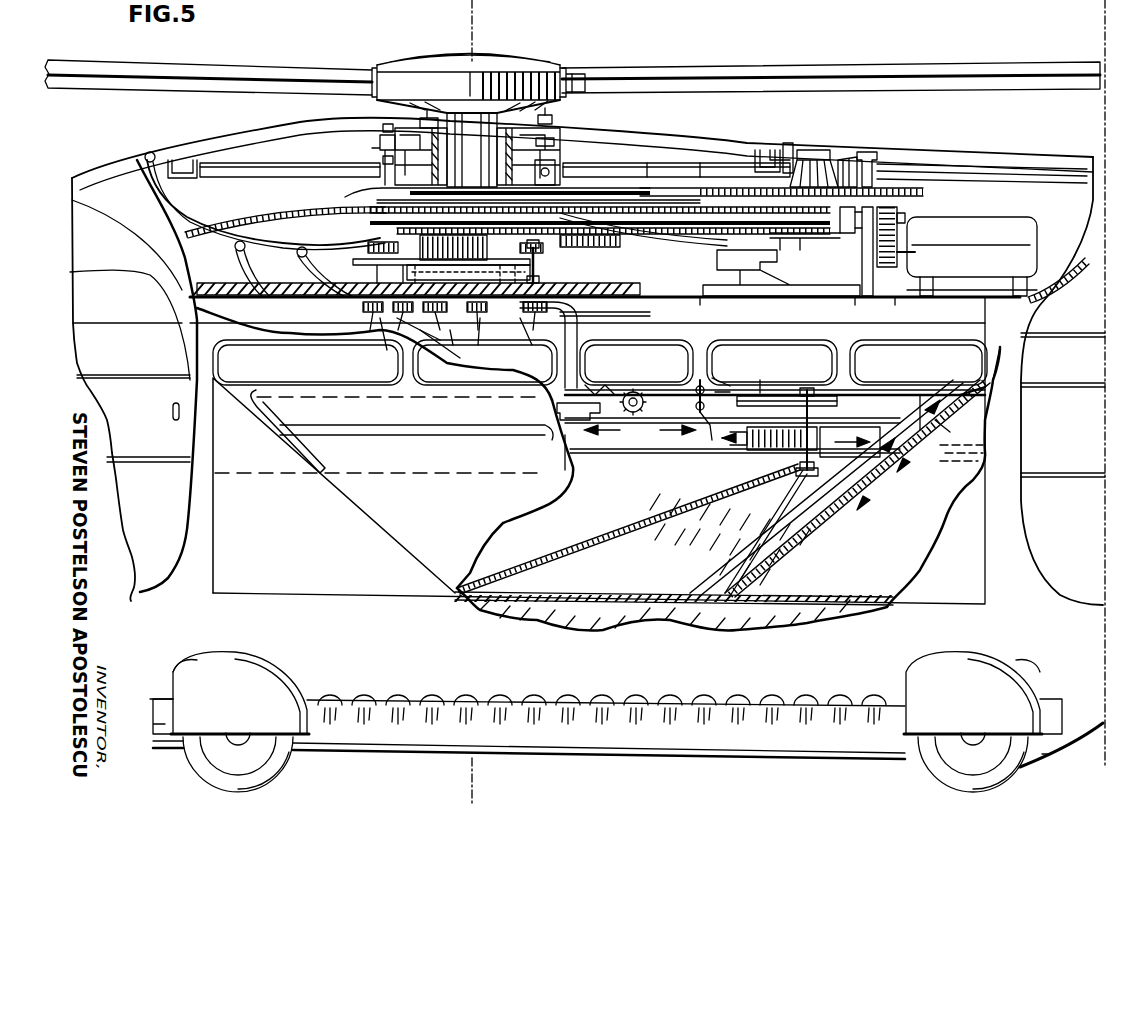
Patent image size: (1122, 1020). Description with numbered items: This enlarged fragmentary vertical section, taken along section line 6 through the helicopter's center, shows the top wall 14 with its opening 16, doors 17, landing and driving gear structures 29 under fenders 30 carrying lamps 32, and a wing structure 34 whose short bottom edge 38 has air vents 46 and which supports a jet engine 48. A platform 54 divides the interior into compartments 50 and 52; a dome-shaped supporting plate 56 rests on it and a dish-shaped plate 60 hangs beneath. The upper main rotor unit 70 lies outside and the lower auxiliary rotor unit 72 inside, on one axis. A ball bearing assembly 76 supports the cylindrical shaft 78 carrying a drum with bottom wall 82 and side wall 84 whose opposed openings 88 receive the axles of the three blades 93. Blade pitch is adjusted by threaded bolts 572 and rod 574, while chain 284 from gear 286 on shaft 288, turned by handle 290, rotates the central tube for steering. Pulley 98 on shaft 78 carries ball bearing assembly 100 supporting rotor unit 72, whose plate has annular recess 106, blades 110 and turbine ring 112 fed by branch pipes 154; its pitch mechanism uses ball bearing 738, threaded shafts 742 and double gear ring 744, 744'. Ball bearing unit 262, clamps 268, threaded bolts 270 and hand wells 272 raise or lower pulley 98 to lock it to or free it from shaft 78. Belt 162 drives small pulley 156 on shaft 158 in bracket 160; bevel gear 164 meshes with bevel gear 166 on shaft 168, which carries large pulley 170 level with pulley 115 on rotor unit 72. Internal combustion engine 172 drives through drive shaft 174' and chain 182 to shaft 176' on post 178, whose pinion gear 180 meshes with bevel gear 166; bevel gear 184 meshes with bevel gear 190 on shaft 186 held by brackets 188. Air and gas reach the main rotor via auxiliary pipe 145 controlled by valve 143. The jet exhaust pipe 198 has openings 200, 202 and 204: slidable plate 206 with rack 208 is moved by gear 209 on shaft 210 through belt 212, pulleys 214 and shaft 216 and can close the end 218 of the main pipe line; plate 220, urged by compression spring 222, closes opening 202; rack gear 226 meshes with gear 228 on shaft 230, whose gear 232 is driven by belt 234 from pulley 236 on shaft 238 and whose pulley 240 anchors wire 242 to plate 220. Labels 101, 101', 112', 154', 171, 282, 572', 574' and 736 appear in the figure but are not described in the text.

The section line 6- 6 is at (455, 18).
The top wall 14 is at (718, 145).
The opening 16 is at (556, 67).
The doors 17 is at (158, 566).
The landing and driving gear structures 29 is at (300, 772).
The fenders or shields 30 is at (282, 676).
The lamps 32 is at (168, 688).
The wing structure 34 is at (368, 533).
The bottom edge 38 is at (866, 596).
The air vents 46 is at (592, 591).
The jet engine 48 is at (282, 458).
The compartment 50 is at (605, 278).
The compartment 52 is at (730, 539).
The platform 54 is at (235, 283).
The dome-shaped supporting plate 56 is at (648, 213).
The dish-shaped plate 60 is at (337, 298).
The upper main rotor unit 70 is at (485, 67).
The lower auxiliary rotor unit 72 is at (378, 148).
The ball bearing assembly 76 is at (424, 122).
The sleeve or shaft 78 is at (472, 150).
The bottom wall 82 is at (486, 53).
The side wall 84 is at (412, 76).
The opposed openings 88 is at (578, 77).
The blade 93 is at (245, 70).
The pulley 98 is at (578, 247).
The ball bearing assembly 100 is at (555, 170).
The guide 101 is at (1002, 362).
The guide 101' is at (936, 413).
The annular recess 106 is at (472, 702).
The blades 110 is at (285, 170).
The turbine ring 112 is at (205, 157).
The bracket 112' is at (750, 158).
The pulley 115 is at (396, 190).
The valve 143 is at (450, 330).
The auxiliary pipe 145 is at (462, 360).
The branch pipes 154 is at (265, 201).
The control cable 154' is at (771, 129).
The small pulley 156 is at (786, 240).
The upright shaft 158 is at (705, 280).
The bracket 160 is at (705, 298).
The belt 162 is at (662, 234).
The bevel gear 164 is at (724, 216).
The bevel gear 166 is at (784, 217).
The shaft 168 is at (800, 150).
The large pulley 170 is at (702, 191).
The plate partition 171 is at (652, 170).
The internal combustion engine 172 is at (1005, 226).
The drive shaft 174' is at (931, 244).
The shaft 176' is at (929, 233).
The upright post 178 is at (855, 298).
The pinion gear 180 is at (860, 262).
The chain 182 is at (895, 298).
The bevel gear 184 is at (790, 152).
The rotatable shaft 186 is at (952, 166).
The brackets 188 is at (876, 165).
The bevel gear 190 is at (845, 157).
The exhaust pipe 198 is at (607, 450).
The opening 200 is at (700, 382).
The opening 202 is at (920, 395).
The intermediate opening 204 is at (862, 428).
The slidable plate 206 is at (638, 440).
The rack 208 is at (590, 390).
The gear 209 is at (638, 392).
The rotatable shaft 210 is at (628, 425).
The belt 212 is at (718, 375).
The pulley 214 is at (760, 380).
The rotatable shaft 216 is at (723, 390).
The adjacent end of main pipe line 218 is at (540, 400).
The slidable plate 220 is at (930, 472).
The compression spring 222 is at (975, 395).
The rack gear 226 is at (745, 482).
The gear 228 is at (816, 430).
The shaft 230 is at (800, 470).
The gear 232 is at (810, 392).
The belt 234 is at (737, 463).
The pulley 236 is at (705, 442).
The shaft 238 is at (690, 425).
The pulley 240 is at (830, 530).
The wire 242 is at (846, 510).
The ball bearing unit 262 is at (545, 248).
The clamps 268 is at (540, 262).
The threaded bolts 270 is at (542, 278).
The hand wells 272 is at (384, 358).
The clutch element 282 is at (517, 254).
The chain 284 is at (468, 259).
The gear 286 is at (370, 242).
The shaft 288 is at (355, 258).
The handle 290 is at (375, 318).
The threaded bolts 572 is at (384, 425).
The pipe 572' is at (561, 345).
The rod 574 is at (534, 339).
The cable 574' is at (497, 339).
The fastener 736 is at (382, 128).
The ball bearing 738 is at (382, 160).
The threaded shafts 742 is at (552, 118).
The double gear ring 744 is at (587, 114).
The gear ring 744' is at (564, 139).